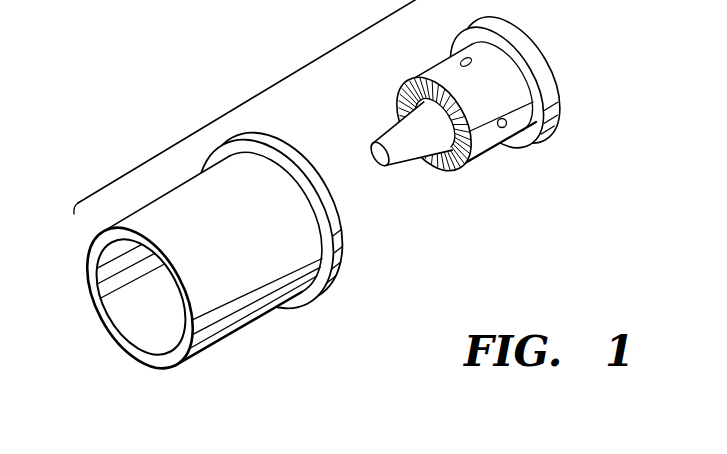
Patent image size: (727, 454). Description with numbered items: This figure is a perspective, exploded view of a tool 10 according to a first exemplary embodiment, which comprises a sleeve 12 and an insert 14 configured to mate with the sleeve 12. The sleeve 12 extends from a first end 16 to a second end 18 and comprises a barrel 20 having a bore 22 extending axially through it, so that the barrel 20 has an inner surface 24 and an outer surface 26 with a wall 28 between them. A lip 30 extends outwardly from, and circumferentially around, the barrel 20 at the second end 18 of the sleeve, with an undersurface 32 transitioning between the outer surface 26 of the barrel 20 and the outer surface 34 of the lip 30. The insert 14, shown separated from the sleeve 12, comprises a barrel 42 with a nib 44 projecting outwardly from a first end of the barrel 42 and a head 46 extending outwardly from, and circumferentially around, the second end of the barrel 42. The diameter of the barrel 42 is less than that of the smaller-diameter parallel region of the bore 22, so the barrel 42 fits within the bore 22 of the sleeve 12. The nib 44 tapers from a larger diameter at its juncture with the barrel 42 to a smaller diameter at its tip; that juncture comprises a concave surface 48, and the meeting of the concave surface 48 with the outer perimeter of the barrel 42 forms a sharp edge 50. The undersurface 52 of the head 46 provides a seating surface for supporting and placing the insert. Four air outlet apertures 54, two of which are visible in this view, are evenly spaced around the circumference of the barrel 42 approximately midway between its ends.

The tool 10 is at (298, 72).
The sleeve 12 is at (213, 259).
The insert 14 is at (487, 152).
The first end 16 is at (132, 347).
The second end 18 is at (345, 235).
The barrel 20 is at (97, 229).
The bore 22 is at (113, 296).
The inner surface 24 is at (167, 340).
The outer surface 26 is at (248, 298).
The wall 28 is at (95, 289).
The lip 30 is at (275, 142).
The undersurface 32 is at (318, 287).
The outer surface 34 is at (328, 207).
The barrel 42 is at (515, 81).
The nib 44 is at (385, 135).
The head 46 is at (545, 68).
The concave surface 48 is at (449, 172).
The sharp edge 50 is at (430, 80).
The undersurface 52 is at (530, 137).
The air outlet apertures 54 is at (466, 58).